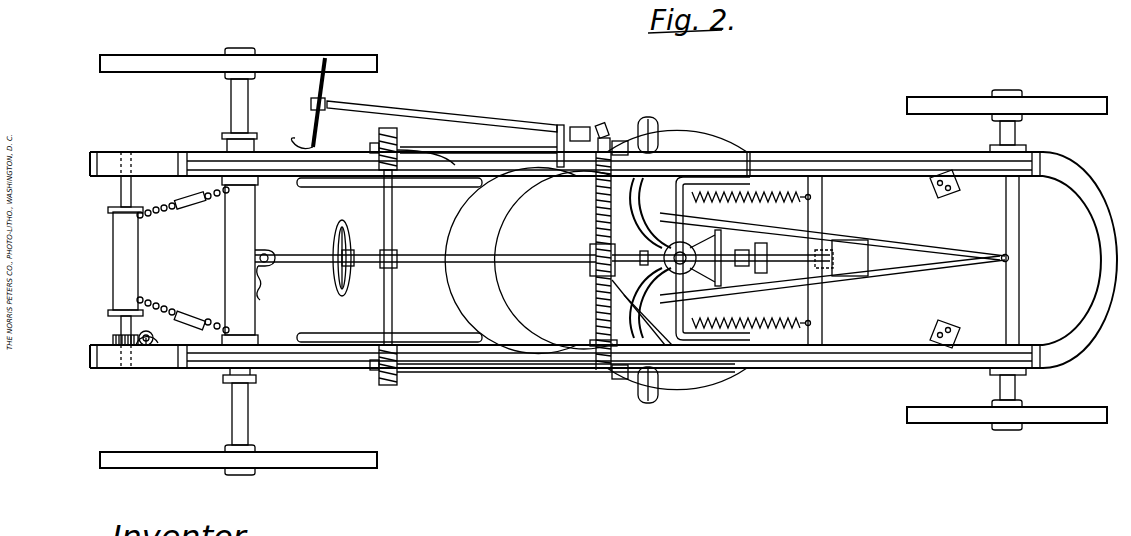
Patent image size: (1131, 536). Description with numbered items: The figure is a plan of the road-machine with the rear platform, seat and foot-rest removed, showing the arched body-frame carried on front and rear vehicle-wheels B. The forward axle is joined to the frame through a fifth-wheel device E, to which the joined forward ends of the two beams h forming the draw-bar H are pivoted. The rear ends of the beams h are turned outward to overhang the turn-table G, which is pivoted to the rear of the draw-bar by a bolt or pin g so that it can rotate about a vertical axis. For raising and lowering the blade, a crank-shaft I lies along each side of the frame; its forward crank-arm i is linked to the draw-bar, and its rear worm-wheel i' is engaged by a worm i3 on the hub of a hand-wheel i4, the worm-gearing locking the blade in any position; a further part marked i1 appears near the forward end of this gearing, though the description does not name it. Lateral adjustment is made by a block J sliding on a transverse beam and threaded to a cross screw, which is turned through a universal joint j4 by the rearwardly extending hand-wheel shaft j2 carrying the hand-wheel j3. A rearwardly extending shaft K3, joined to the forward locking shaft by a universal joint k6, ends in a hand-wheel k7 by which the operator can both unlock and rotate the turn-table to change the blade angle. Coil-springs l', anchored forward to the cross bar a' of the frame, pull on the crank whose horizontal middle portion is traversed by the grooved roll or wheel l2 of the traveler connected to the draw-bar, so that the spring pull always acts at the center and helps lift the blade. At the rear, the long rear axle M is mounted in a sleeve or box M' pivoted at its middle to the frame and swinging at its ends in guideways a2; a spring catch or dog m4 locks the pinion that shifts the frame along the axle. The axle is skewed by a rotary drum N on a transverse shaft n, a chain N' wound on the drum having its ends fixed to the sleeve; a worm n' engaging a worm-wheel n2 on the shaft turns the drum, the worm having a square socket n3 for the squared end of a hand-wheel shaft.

The guideways a2 is at (165, 162).
The cross bar or beam a' is at (913, 260).
The vehicle-wheels B is at (265, 52).
The fifth-wheel device E is at (1090, 283).
The turn-table G is at (565, 335).
The bolt or pin g is at (648, 270).
The draw-bar H is at (834, 259).
The beams h is at (862, 268).
The crank-shafts I is at (505, 147).
The crank-arm i is at (635, 267).
The worm-wheel i' is at (369, 301).
The spring coil i1 is at (393, 136).
The worm i3 is at (372, 146).
The hand-wheel i4 is at (462, 188).
The block J is at (597, 308).
The hand-wheel shaft j2 is at (465, 120).
The hand-wheel j3 is at (318, 85).
The universal joint j4 is at (600, 136).
The shaft K3 is at (500, 245).
The universal joint k6 is at (590, 256).
The hand-wheel k7 is at (335, 230).
The coil-springs l' is at (751, 265).
The roll or wheel l2 is at (658, 186).
The rear axle M is at (214, 262).
The sleeve or box M' is at (211, 260).
The spring catch or dog m4 is at (262, 286).
The rotary drum N is at (110, 261).
The chain N' is at (182, 256).
The shaft n is at (106, 260).
The worm n' is at (158, 332).
The worm-wheel n2 is at (114, 340).
The square opening or socket n3 is at (146, 342).